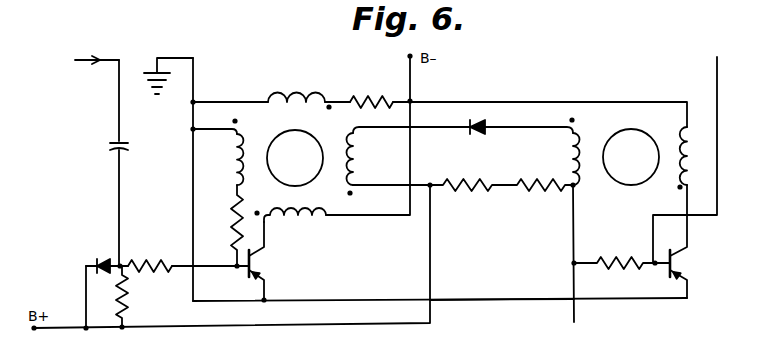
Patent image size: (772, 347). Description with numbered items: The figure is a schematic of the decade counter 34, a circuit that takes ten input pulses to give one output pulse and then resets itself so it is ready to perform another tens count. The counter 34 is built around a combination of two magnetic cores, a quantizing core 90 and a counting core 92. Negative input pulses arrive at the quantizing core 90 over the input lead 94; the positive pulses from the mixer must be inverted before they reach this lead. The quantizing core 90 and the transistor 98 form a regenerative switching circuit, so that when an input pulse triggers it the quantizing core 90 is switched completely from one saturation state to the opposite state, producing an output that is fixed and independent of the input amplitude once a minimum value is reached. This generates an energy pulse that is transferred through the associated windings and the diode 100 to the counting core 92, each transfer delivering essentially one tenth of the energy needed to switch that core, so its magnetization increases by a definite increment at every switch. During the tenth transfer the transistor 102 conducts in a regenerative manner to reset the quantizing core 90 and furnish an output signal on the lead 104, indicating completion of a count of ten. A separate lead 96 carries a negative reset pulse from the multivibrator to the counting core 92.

The decade counter 34 is at (484, 310).
The quantizing core 90 is at (307, 168).
The counting core 92 is at (643, 167).
The input lead 94 is at (84, 61).
The lead 96 is at (690, 151).
The transistor 98 is at (296, 275).
The diode 100 is at (479, 138).
The transistor 102 is at (730, 272).
The lead 104 is at (576, 316).